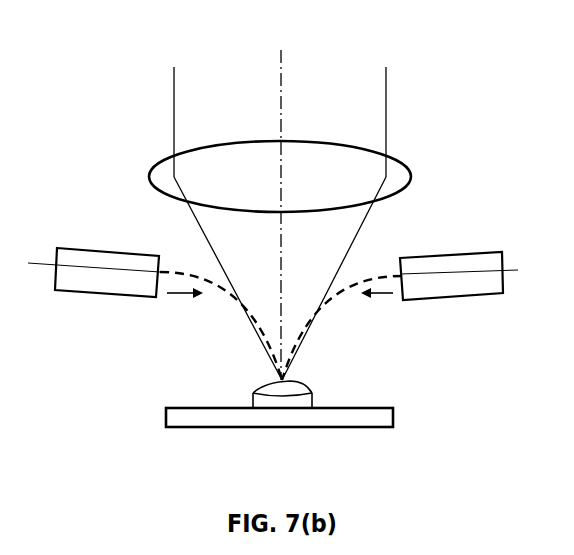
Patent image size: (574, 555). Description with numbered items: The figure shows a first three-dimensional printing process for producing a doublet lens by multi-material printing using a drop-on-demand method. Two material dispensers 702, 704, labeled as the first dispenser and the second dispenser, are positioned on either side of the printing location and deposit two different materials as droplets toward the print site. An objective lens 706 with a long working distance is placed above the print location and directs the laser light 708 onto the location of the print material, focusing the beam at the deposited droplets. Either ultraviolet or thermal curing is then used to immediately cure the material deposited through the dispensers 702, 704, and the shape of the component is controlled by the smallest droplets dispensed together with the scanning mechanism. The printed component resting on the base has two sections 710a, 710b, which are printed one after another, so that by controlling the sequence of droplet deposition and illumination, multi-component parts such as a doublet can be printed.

The laser light 708 is at (280, 201).
The objective lens 706 is at (392, 173).
The material dispenser 702 is at (102, 257).
The material dispenser 704 is at (437, 270).
The section 710a is at (260, 398).
The section 710b is at (258, 384).